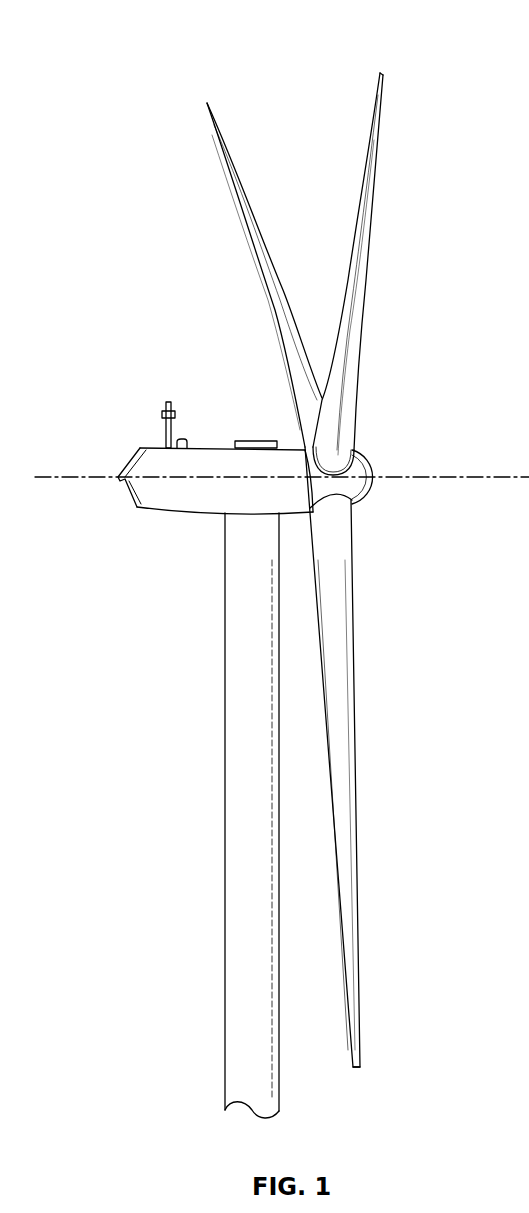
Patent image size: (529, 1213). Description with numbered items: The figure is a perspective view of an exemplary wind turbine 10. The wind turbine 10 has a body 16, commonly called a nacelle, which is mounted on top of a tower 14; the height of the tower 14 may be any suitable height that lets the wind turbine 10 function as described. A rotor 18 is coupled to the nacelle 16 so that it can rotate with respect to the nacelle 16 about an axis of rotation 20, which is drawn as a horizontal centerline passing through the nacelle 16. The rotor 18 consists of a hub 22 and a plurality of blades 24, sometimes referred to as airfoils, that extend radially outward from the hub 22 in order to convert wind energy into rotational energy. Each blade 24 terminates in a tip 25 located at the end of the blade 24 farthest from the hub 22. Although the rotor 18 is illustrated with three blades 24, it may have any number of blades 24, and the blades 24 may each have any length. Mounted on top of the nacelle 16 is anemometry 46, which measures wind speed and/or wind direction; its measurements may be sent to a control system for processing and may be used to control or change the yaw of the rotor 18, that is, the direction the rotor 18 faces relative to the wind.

The wind turbine 10 is at (76, 122).
The tower 14 is at (224, 643).
The body 16 is at (162, 512).
The rotor 18 is at (307, 573).
The axis of rotation 20 is at (478, 477).
The hub 22 is at (368, 494).
The blade 24 is at (236, 205).
The tip 25 is at (381, 74).
The anemometry 46 is at (164, 412).